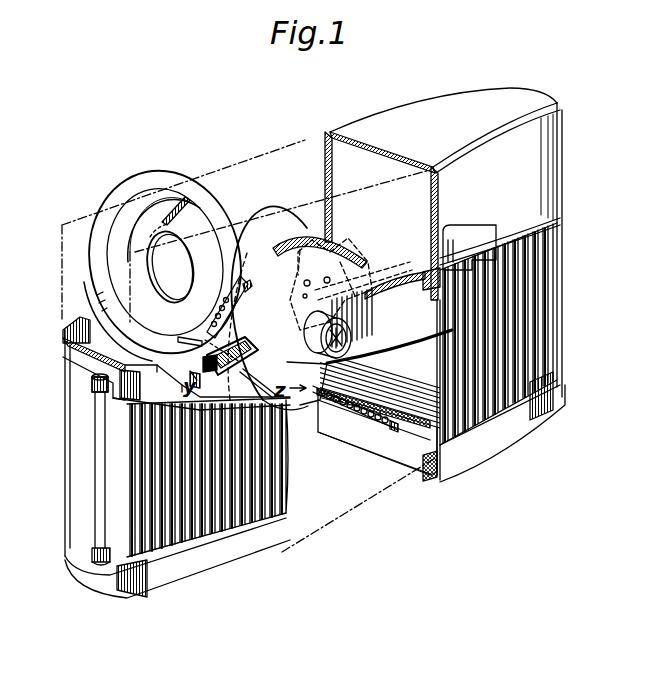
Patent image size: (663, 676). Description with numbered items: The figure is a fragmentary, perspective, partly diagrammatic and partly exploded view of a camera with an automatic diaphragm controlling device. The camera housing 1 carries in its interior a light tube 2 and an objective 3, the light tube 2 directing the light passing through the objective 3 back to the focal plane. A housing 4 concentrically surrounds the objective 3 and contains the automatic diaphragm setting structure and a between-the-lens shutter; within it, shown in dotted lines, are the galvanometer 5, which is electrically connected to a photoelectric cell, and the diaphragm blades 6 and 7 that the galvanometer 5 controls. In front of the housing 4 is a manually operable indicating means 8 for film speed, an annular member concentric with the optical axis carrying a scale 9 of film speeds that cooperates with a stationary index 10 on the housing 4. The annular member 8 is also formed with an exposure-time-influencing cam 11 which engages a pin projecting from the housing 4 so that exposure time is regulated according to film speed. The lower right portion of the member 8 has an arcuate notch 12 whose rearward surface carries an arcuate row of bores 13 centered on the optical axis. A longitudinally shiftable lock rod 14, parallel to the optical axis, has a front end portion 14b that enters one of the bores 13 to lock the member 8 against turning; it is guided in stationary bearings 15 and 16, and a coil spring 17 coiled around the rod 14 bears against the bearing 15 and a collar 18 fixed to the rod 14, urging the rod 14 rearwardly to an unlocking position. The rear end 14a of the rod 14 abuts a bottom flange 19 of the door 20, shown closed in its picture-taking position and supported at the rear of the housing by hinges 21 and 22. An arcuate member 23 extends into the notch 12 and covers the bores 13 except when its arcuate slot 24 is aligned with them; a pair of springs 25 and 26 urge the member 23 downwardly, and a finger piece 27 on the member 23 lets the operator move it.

The camera housing 1 is at (80, 447).
The light tube 2 is at (432, 283).
The objective 3 is at (372, 290).
The housing 4 is at (282, 258).
The galvanometer 5 is at (343, 280).
The diaphragm blade 6 is at (272, 262).
The diaphragm blade 7 is at (330, 240).
The indicating means 8 is at (183, 190).
The scale 9 is at (117, 212).
The stationary index 10 is at (310, 230).
The exposure-time-influencing cam 11 is at (151, 215).
The arcuate notch 12 is at (215, 306).
The bores 13 is at (228, 298).
The lock rod 14 is at (318, 402).
The rear end 14a is at (377, 445).
The front end portion 14b is at (190, 345).
The stationary bearing 15 is at (335, 408).
The stationary bearing 16 is at (405, 440).
The coil spring 17 is at (352, 426).
The collar 18 is at (388, 428).
The bottom flange 19 is at (436, 445).
The door 20 is at (283, 512).
The hinge 21 is at (95, 553).
The hinge 22 is at (92, 381).
The arcuate member 23 is at (228, 372).
The arcuate slot 24 is at (235, 352).
The spring 25 is at (208, 366).
The spring 26 is at (244, 292).
The finger piece 27 is at (243, 385).